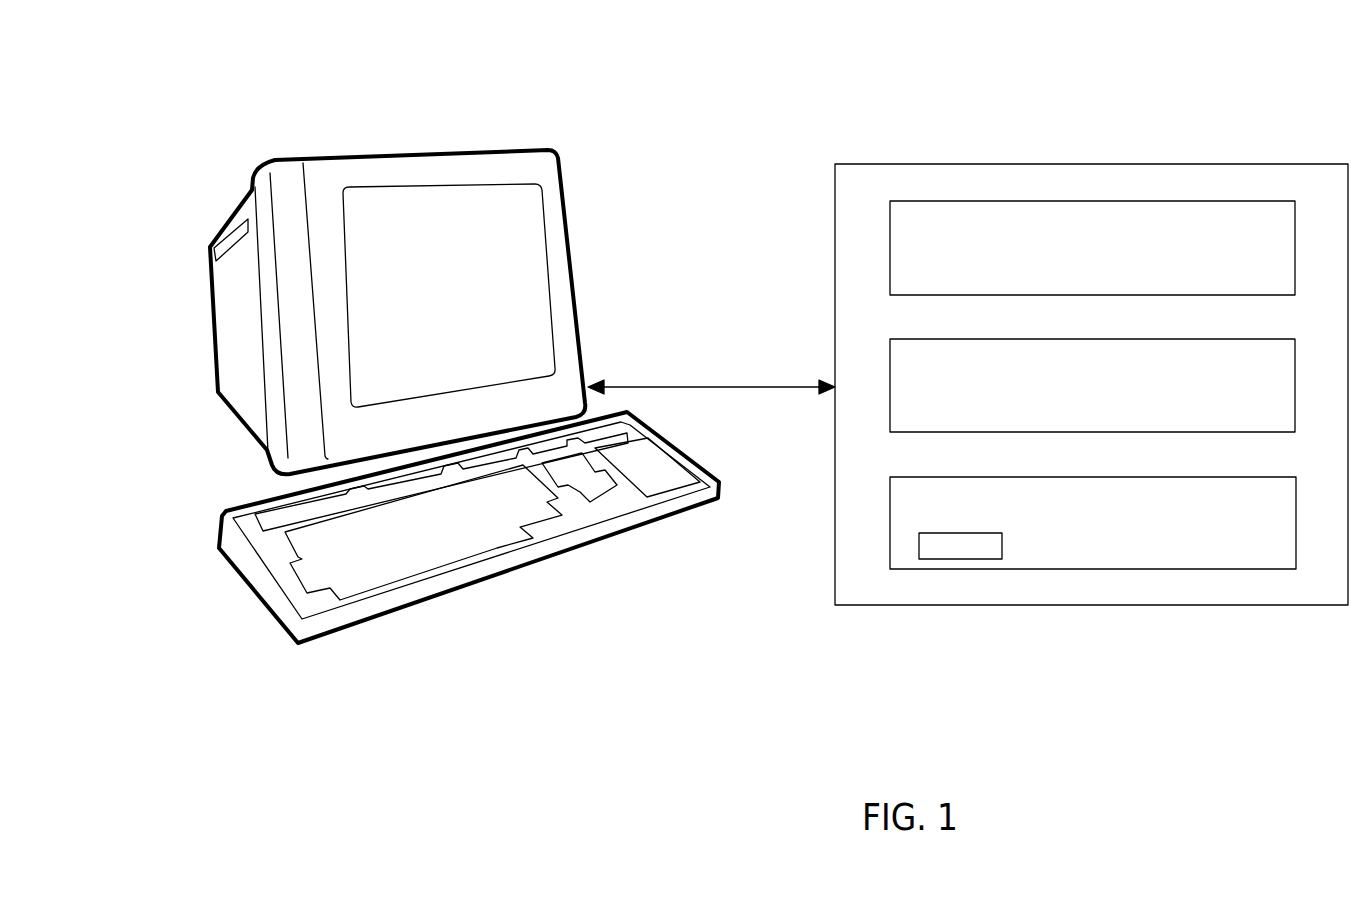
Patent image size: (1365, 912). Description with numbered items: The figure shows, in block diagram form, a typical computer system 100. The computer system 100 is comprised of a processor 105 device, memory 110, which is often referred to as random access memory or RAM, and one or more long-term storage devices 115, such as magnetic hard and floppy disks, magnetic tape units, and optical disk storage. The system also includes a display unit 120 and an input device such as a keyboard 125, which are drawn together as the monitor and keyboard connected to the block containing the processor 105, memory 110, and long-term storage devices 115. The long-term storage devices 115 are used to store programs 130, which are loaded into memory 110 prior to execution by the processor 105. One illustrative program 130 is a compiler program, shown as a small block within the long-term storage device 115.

The computer system 100 is at (293, 106).
The processor 105 is at (1092, 248).
The memory 110 is at (1092, 385).
The long-term storage device 115 is at (1093, 600).
The display unit 120 is at (212, 259).
The keyboard 125 is at (540, 560).
The program 130 is at (962, 547).